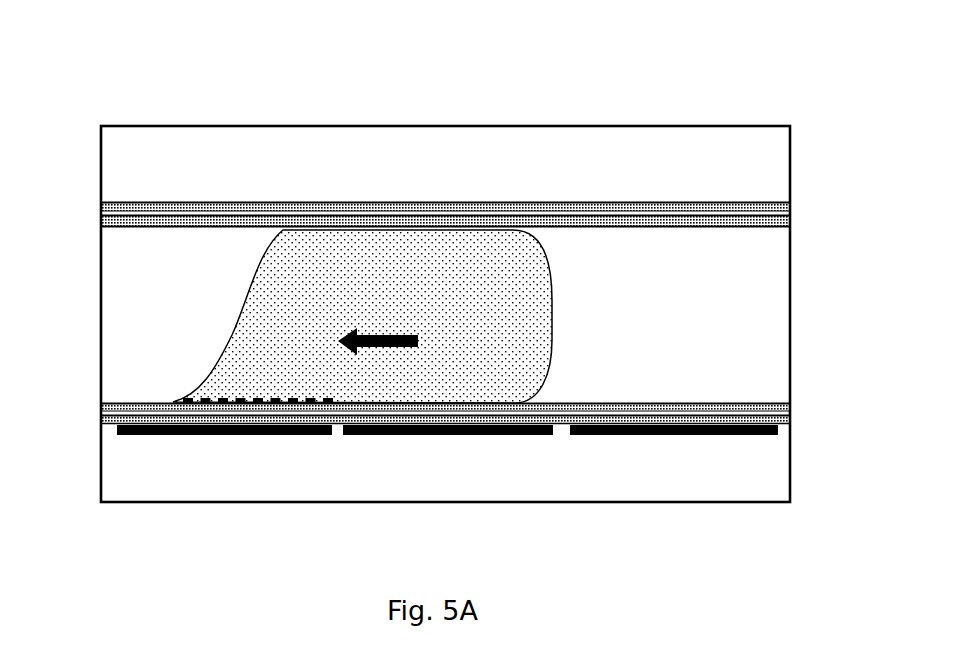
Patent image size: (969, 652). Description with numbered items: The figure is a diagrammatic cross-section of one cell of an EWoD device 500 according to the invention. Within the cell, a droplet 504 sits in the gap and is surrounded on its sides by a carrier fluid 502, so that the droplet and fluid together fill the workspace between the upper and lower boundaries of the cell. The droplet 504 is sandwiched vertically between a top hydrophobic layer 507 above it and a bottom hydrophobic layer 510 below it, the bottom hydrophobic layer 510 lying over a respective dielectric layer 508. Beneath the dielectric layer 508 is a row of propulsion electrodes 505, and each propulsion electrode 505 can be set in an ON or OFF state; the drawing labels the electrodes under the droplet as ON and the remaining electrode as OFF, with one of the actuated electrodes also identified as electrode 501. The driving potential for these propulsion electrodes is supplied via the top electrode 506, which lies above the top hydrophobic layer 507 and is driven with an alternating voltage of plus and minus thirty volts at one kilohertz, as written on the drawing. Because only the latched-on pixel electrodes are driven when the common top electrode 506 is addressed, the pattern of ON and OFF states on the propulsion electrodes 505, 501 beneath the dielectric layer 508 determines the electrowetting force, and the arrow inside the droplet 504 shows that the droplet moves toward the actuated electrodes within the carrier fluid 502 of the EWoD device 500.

The EWoD device 500 is at (105, 110).
The actuation electrode (ON) 501 is at (310, 435).
The carrier fluid 502 is at (710, 324).
The droplet 504 is at (498, 375).
The propulsion electrode 505 is at (757, 435).
The top electrode 506 is at (757, 201).
The top hydrophobic layer 507 is at (790, 228).
The dielectric layer 508 is at (790, 423).
The bottom hydrophobic layer 510 is at (790, 410).